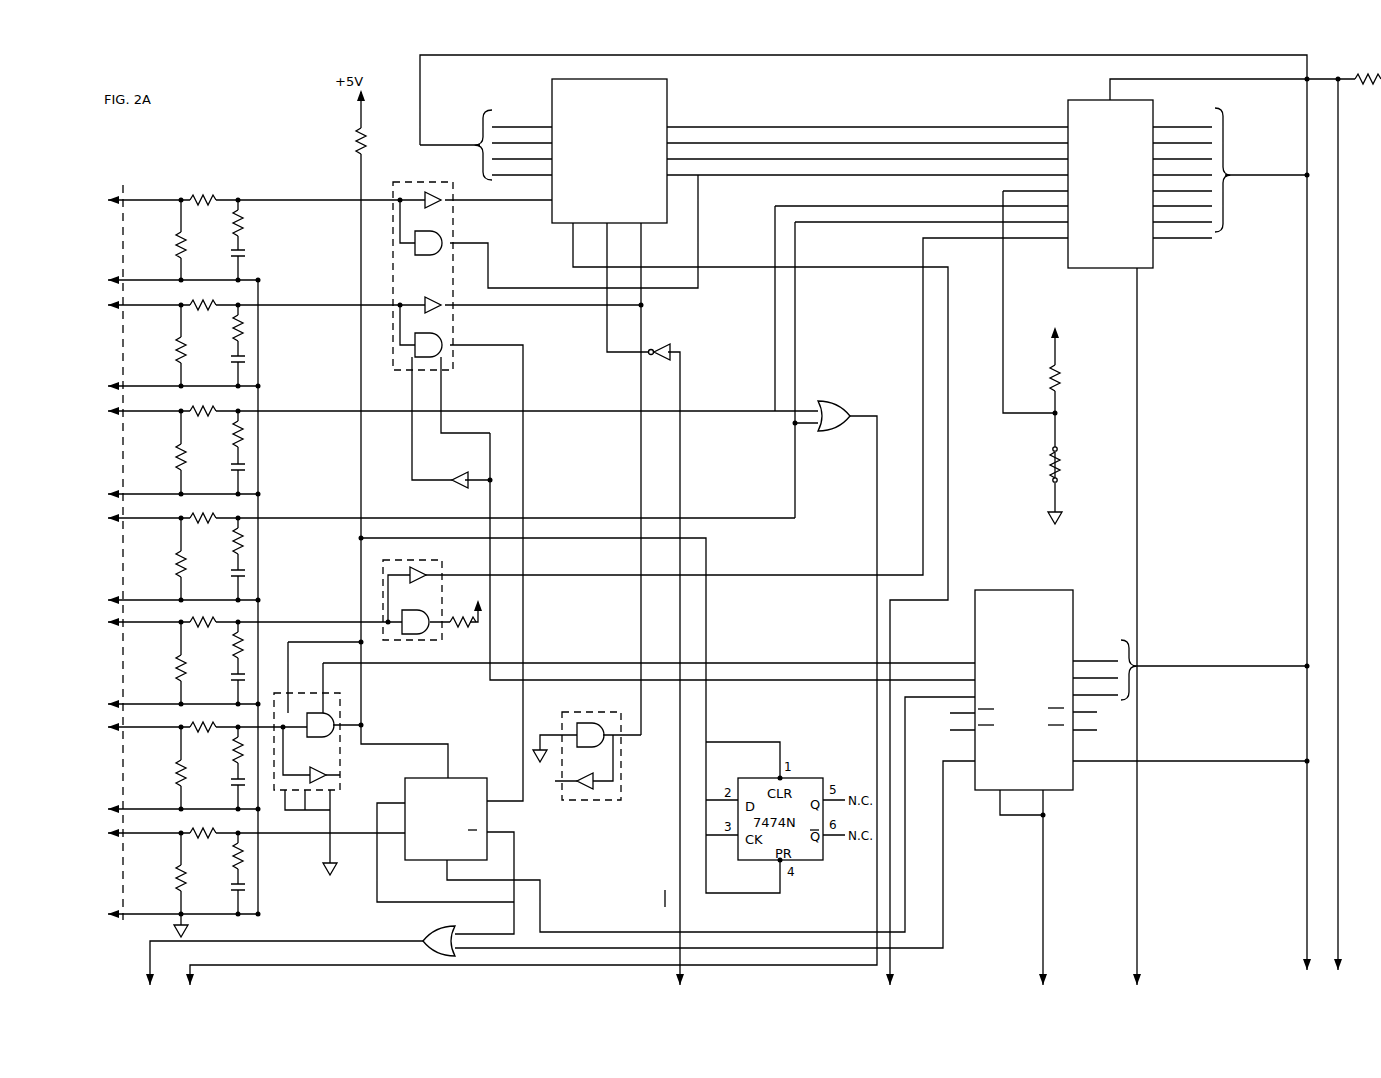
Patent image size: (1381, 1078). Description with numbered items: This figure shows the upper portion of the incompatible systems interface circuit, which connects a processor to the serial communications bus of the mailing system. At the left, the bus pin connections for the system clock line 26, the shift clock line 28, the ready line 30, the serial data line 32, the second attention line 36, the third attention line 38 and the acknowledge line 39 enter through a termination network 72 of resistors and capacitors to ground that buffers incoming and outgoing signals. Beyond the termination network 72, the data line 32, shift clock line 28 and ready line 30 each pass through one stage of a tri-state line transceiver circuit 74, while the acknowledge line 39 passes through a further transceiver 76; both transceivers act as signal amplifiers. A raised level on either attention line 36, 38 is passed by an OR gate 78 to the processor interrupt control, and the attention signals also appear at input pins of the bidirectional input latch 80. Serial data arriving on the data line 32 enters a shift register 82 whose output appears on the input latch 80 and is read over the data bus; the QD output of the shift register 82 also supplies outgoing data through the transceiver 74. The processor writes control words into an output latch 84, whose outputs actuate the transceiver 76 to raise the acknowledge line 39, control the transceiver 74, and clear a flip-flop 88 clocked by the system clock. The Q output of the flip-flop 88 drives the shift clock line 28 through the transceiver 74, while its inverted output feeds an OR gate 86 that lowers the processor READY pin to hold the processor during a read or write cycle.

The system clock line 26 is at (168, 835).
The shift clock line 28 is at (167, 307).
The ready line 30 is at (170, 624).
The serial data line 32 is at (157, 197).
The ATTN 2 line 36 is at (169, 413).
The ATTN 3 line 38 is at (167, 520).
The acknowledge line 39 is at (168, 729).
The termination network 72 is at (278, 238).
The tri-state line transceiver circuit 74 is at (393, 281).
The transceiver 76 is at (340, 737).
The OR gate 78 is at (832, 432).
The input latch 80 is at (1155, 258).
The shift register 82 is at (668, 98).
The output latch 84 is at (1073, 603).
The OR gate 86 is at (428, 928).
The flip-flop 88 is at (478, 772).